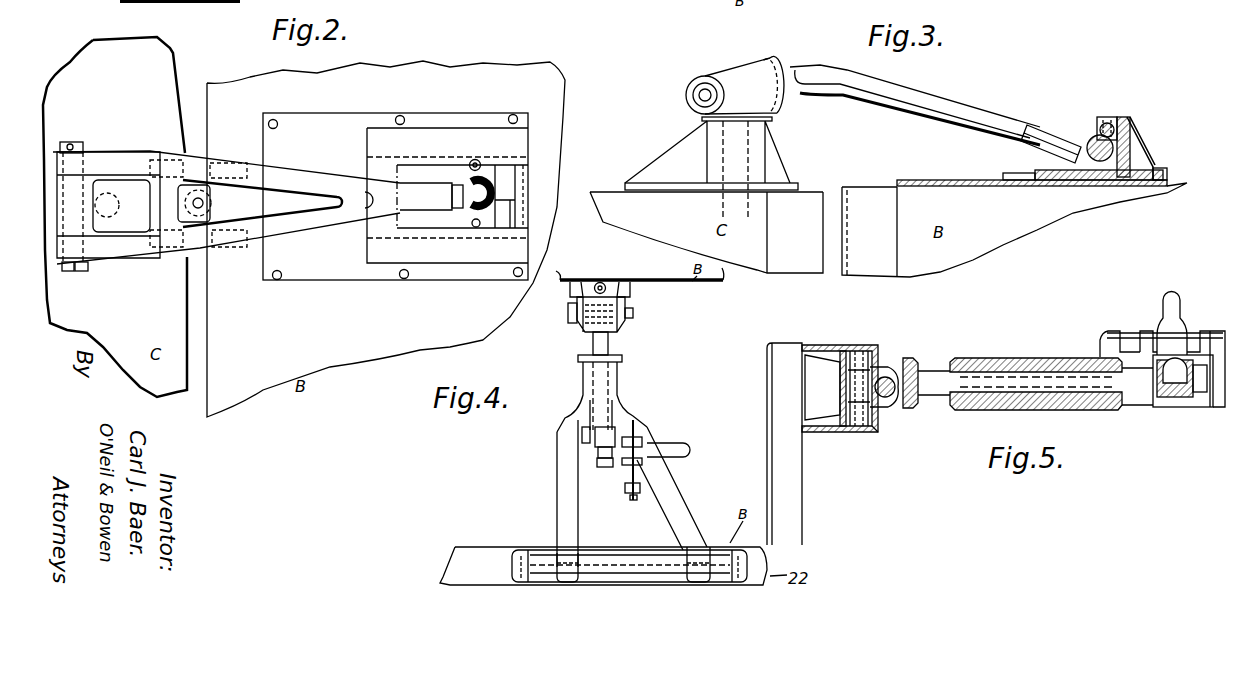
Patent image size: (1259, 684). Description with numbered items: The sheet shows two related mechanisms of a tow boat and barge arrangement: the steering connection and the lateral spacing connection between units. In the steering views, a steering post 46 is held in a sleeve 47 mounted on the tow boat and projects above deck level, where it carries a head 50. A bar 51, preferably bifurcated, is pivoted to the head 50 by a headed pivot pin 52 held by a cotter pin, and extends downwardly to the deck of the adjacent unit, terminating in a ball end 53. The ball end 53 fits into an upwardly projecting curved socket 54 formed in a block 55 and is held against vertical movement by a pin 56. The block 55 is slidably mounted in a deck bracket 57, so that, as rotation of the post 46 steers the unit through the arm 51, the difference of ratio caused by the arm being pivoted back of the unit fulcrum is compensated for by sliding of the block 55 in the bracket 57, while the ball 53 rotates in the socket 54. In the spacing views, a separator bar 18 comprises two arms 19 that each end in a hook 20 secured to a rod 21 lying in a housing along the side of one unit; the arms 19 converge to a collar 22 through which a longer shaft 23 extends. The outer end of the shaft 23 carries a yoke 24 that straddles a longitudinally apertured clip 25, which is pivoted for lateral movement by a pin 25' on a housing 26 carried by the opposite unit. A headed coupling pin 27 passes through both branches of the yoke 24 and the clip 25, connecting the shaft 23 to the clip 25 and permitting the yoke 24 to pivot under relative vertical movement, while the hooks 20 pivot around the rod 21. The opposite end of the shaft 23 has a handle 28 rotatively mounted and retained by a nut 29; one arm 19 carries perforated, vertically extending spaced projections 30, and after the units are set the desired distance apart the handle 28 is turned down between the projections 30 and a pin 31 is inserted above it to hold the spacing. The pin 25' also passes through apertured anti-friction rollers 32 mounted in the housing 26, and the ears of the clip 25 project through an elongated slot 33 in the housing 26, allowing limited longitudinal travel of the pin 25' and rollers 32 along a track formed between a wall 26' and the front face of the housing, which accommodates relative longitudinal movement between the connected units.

In FIG. 4, the separator bar 18 is at (618, 464).
In FIG. 4, the arms 19 is at (557, 487).
In FIG. 4, the hook 20 is at (580, 553).
In FIG. 4, the rod 21 is at (628, 553).
In FIG. 4, the collar 22 is at (630, 386).
In FIG. 5, the collar 22 is at (997, 360).
In FIG. 4, the shaft 23 is at (595, 438).
In FIG. 5, the shaft 23 is at (932, 380).
In FIG. 4, the yoke 24 is at (575, 330).
In FIG. 4, the clip 25 is at (621, 330).
In FIG. 5, the clip 25 is at (934, 383).
In FIG. 4, the pin 25' is at (619, 273).
In FIG. 5, the pin 25' is at (889, 380).
In FIG. 4, the housing 26 is at (616, 295).
In FIG. 5, the housing 26 is at (840, 373).
In FIG. 5, the wall 26' is at (825, 388).
In FIG. 4, the coupling pin 27 is at (640, 313).
In FIG. 5, the coupling pin 27 is at (893, 394).
In FIG. 4, the handle 28 is at (686, 447).
In FIG. 5, the handle 28 is at (1173, 292).
In FIG. 4, the nut 29 is at (603, 468).
In FIG. 5, the nut 29 is at (1195, 397).
In FIG. 4, the projections 30 is at (641, 440).
In FIG. 5, the projections 30 is at (1117, 331).
In FIG. 4, the pin 31 is at (640, 483).
In FIG. 5, the pin 31 is at (1143, 331).
In FIG. 5, the anti-friction rollers 32 is at (870, 432).
In FIG. 5, the elongated slot 33 is at (880, 404).
In FIG. 2, the steering post 46 is at (90, 197).
In FIG. 3, the steering post 46 is at (750, 160).
In FIG. 3, the sleeve 47 is at (658, 190).
In FIG. 2, the head 50 is at (127, 193).
In FIG. 3, the head 50 is at (765, 62).
In FIG. 2, the bar 51 is at (307, 176).
In FIG. 3, the bar 51 is at (940, 101).
In FIG. 2, the pivot pin 52 is at (80, 272).
In FIG. 3, the pivot pin 52 is at (698, 96).
In FIG. 2, the ball end 53 is at (483, 193).
In FIG. 3, the ball end 53 is at (1107, 183).
In FIG. 2, the socket 54 is at (468, 218).
In FIG. 3, the socket 54 is at (1128, 118).
In FIG. 2, the block 55 is at (508, 213).
In FIG. 3, the block 55 is at (1147, 153).
In FIG. 2, the pin 56 is at (463, 193).
In FIG. 3, the pin 56 is at (1108, 122).
In FIG. 3, the deck bracket 57 is at (1167, 171).